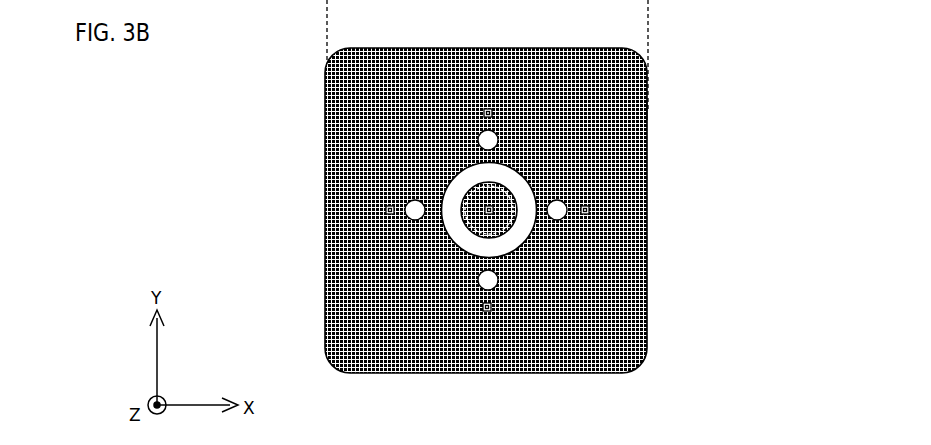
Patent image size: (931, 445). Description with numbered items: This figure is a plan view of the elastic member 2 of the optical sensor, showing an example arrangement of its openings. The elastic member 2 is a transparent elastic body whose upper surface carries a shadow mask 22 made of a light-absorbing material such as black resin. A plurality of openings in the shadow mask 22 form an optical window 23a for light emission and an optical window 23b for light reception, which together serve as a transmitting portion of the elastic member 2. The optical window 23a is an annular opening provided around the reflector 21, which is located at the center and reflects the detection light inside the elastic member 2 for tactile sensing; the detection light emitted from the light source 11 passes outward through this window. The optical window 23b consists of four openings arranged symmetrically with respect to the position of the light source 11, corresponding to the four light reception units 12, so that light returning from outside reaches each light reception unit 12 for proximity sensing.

The elastic member 2 is at (325, 113).
The shadow mask 22 is at (630, 108).
The light reception unit 12 is at (386, 210).
The optical window for light emission 23a is at (455, 179).
The optical window for light reception 23b is at (412, 201).
The reflector 21 is at (513, 186).
The light source 11 is at (462, 231).